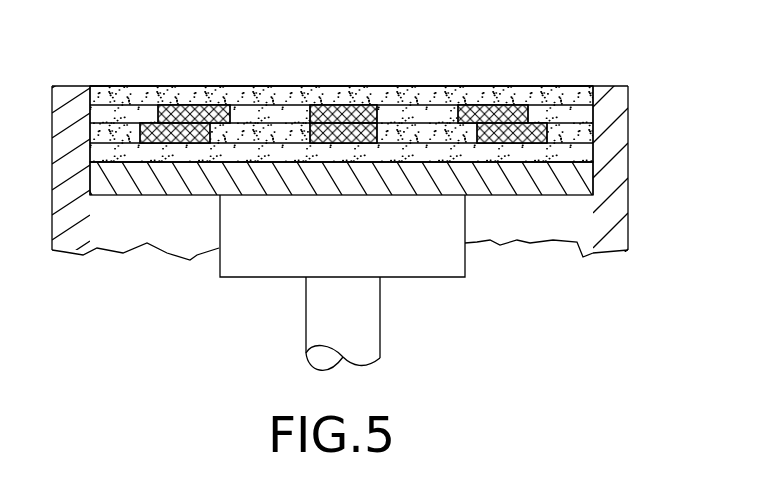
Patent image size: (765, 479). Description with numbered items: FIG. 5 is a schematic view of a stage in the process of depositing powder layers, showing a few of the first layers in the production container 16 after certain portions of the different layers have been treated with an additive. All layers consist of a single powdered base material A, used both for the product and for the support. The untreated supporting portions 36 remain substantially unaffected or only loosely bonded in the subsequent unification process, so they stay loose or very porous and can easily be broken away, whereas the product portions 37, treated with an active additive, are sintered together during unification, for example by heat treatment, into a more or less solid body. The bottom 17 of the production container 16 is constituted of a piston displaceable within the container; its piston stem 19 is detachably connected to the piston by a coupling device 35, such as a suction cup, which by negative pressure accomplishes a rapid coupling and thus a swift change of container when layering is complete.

The production container 16 is at (60, 218).
The bottom 17 is at (513, 180).
The piston stem 19 is at (357, 315).
The coupling device 35 is at (255, 249).
The supporting portions 36 is at (130, 118).
The product portions 37 is at (186, 110).
The powdered base material A is at (277, 155).